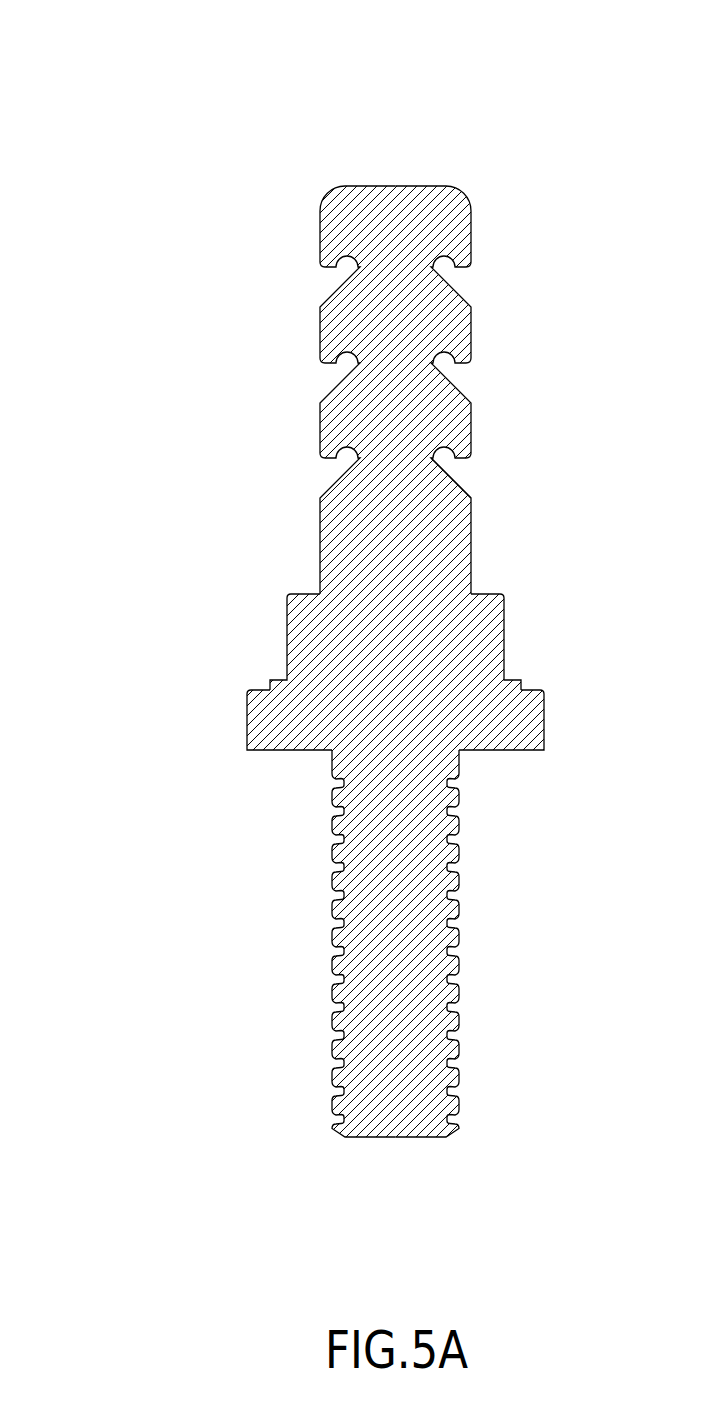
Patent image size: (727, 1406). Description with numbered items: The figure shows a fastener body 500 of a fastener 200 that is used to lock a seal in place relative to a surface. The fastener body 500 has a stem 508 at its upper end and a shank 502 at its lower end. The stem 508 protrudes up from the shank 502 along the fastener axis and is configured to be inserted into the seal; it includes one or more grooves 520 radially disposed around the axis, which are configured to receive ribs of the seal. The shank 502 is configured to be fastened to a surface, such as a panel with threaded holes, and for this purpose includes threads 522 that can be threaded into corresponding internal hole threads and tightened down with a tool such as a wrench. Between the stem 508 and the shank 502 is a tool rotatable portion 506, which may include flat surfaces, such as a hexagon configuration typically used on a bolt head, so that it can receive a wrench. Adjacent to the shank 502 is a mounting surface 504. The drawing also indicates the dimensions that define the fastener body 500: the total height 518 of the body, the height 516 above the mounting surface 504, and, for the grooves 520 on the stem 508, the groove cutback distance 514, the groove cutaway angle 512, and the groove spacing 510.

The fastener 200 is at (124, 40).
The fastener body 500 is at (154, 106).
The shank 502 is at (544, 750).
The mounting surface 504 is at (544, 714).
The tool rotatable portion 506 is at (552, 594).
The stem 508 is at (552, 186).
The groove spacing 510 is at (92, 186).
The groove cutaway angle 512 is at (320, 267).
The groove cutback distance 514 is at (326, 366).
The height above mounting surface 516 is at (247, 690).
The total height 518 is at (556, 1137).
The grooves 520 is at (467, 478).
The threads 522 is at (456, 1095).